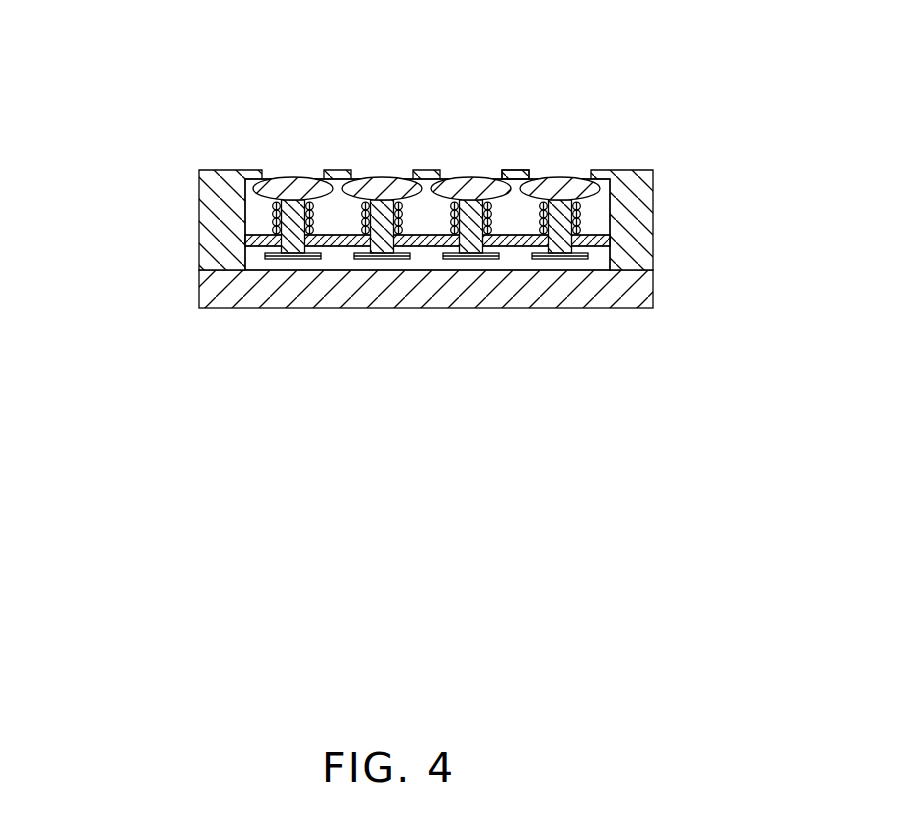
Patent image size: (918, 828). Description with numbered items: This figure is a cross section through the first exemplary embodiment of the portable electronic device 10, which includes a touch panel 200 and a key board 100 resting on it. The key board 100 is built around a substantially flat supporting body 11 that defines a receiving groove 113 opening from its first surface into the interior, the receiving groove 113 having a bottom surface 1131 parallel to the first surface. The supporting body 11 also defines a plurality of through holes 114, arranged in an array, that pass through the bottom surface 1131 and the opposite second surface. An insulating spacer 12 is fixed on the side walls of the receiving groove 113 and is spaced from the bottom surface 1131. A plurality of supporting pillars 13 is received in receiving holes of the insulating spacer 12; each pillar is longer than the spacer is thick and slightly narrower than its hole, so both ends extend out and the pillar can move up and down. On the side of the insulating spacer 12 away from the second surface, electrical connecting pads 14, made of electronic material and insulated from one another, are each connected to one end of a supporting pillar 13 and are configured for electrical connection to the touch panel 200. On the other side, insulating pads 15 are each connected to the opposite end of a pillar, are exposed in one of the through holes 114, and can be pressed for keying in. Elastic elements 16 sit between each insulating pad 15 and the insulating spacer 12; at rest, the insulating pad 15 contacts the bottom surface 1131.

The portable electronic device 10 is at (333, 43).
The key board 100 is at (178, 208).
The supporting body 11 is at (633, 188).
The receiving groove 113 is at (600, 218).
The bottom surface 1131 is at (515, 180).
The through holes 114 is at (483, 176).
The insulating pads 15 is at (567, 185).
The insulating spacer 12 is at (247, 236).
The supporting pillars 13 is at (563, 245).
The electrical connecting pads 14 is at (402, 257).
The elastic elements 16 is at (355, 235).
The touch panel 200 is at (637, 287).